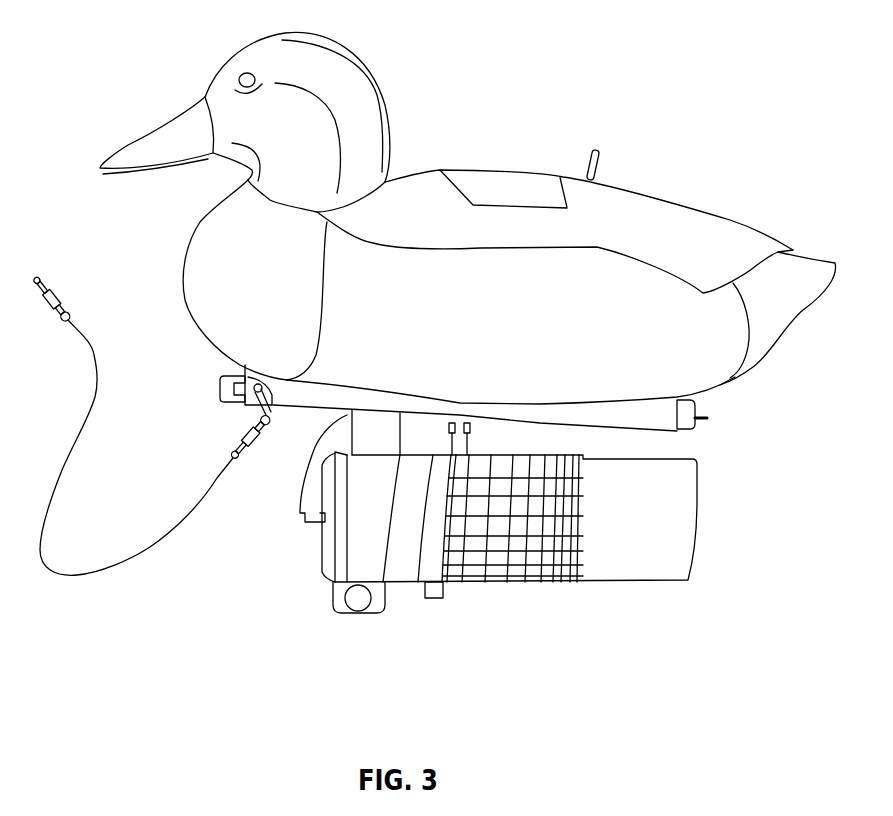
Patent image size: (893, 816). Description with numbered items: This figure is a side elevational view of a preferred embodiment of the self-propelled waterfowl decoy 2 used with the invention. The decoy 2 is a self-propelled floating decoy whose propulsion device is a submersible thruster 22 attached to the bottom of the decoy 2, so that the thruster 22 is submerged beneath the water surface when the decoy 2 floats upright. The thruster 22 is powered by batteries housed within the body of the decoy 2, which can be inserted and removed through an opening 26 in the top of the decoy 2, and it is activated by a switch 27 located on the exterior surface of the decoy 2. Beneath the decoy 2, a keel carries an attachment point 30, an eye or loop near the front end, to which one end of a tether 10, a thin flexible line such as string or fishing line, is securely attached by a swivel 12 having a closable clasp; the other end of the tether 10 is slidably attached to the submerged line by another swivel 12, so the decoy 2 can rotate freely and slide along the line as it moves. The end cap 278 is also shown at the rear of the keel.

The self-propelled decoy 2 is at (732, 132).
The tether 10 is at (112, 569).
The swivel 12 is at (61, 304).
The submersible thruster 22 is at (588, 637).
The opening 26 is at (500, 182).
The switch 27 is at (600, 148).
The attachment point 30 is at (254, 387).
The end cap 278 is at (693, 421).